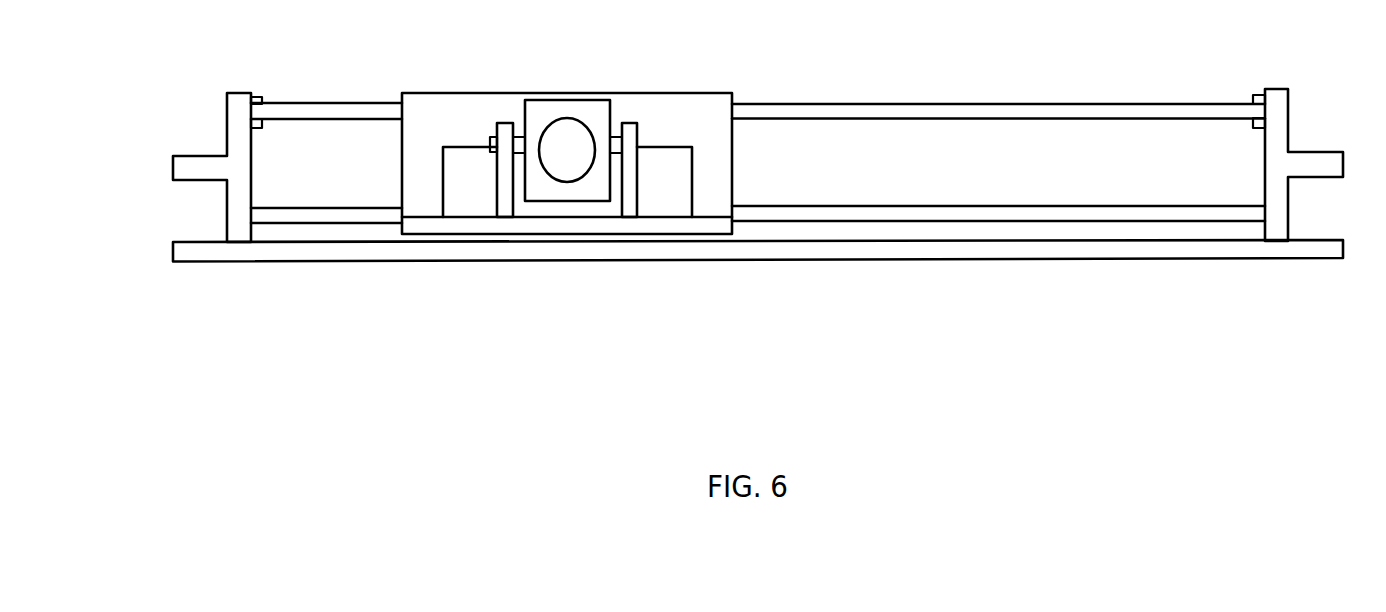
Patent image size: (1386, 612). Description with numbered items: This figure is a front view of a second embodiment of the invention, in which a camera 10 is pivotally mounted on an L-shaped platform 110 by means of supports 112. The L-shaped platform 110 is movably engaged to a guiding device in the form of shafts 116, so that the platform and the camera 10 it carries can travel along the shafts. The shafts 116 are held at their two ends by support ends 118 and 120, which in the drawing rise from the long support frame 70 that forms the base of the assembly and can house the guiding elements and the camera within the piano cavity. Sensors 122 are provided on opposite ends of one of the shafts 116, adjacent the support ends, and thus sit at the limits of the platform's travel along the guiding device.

The camera 10 is at (563, 100).
The support frame 70 is at (1153, 247).
The L-shaped platform 110 is at (718, 108).
The supports 112 is at (633, 183).
The shafts 116 is at (1088, 110).
The support end 118 is at (238, 115).
The support end 120 is at (1280, 108).
The sensors 122 is at (257, 98).